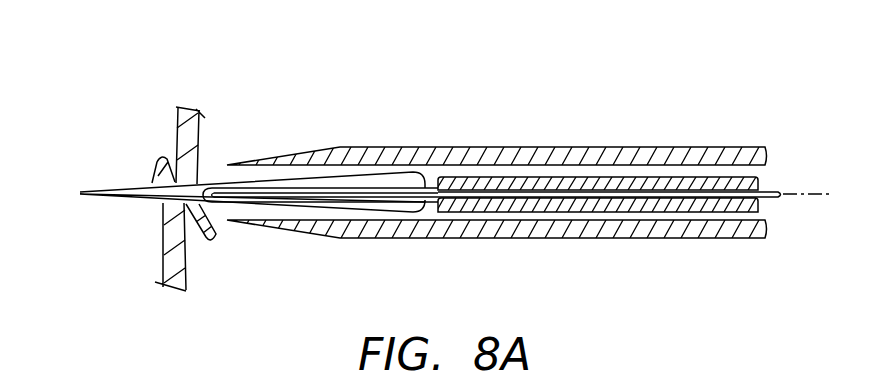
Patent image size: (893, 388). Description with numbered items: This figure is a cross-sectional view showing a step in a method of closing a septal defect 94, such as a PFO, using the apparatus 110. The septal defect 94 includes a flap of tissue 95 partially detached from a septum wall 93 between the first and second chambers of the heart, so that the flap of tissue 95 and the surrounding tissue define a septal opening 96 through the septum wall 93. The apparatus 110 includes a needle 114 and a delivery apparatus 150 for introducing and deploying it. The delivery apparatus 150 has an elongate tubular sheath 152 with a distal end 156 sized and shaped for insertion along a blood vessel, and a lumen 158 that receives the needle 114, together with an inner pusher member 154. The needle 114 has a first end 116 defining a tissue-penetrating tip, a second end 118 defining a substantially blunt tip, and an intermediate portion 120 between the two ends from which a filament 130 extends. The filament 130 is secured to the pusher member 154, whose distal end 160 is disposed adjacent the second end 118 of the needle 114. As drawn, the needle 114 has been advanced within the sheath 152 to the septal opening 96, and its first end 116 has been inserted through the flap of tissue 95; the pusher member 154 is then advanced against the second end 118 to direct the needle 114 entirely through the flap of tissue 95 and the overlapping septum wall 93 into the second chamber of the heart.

The apparatus 110 is at (575, 81).
The sheath 152 is at (495, 147).
The distal end 156 is at (258, 236).
The filament 130 is at (610, 176).
The distal end 160 is at (711, 174).
The pusher member 154 is at (727, 208).
The needle 114 is at (289, 175).
The intermediate portion 120 is at (242, 170).
The second end 118 is at (423, 214).
The lumen 158 is at (520, 221).
The first end 116 is at (110, 197).
The septum wall 93 is at (175, 135).
The flap of tissue 95 is at (211, 243).
The septal opening 96 is at (187, 210).
The septal defect 94 is at (138, 228).
The delivery apparatus 150 is at (648, 255).